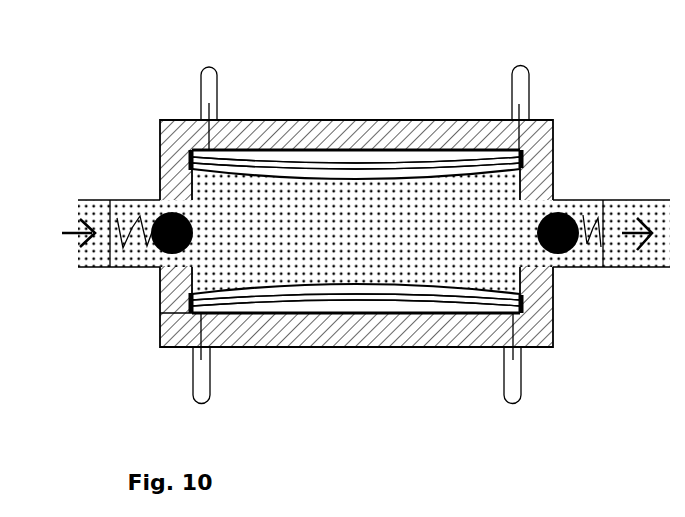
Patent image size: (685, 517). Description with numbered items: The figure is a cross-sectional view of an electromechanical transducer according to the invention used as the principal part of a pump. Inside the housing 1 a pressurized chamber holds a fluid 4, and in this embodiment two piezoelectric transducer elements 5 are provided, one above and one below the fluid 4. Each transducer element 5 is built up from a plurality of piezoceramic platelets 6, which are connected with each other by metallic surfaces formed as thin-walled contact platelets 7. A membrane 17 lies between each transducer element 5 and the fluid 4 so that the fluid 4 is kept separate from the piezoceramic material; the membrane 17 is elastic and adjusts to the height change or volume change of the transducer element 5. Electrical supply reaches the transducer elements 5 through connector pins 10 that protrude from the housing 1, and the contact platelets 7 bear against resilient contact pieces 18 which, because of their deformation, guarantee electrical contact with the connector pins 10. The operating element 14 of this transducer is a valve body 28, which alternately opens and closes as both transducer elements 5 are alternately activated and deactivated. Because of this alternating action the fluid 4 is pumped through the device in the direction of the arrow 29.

The housing 1 is at (347, 213).
The fluid 4 is at (543, 120).
The piezoelectric transducer element 5 is at (523, 301).
The piezoceramic platelets 6 is at (495, 148).
The contact platelets 7 is at (545, 255).
The connector pins 10 is at (520, 84).
The operating element 14 is at (152, 215).
The valve body 28 is at (558, 233).
The membrane 17 is at (387, 280).
The contact pieces 18 is at (515, 150).
The arrow 29 is at (88, 238).